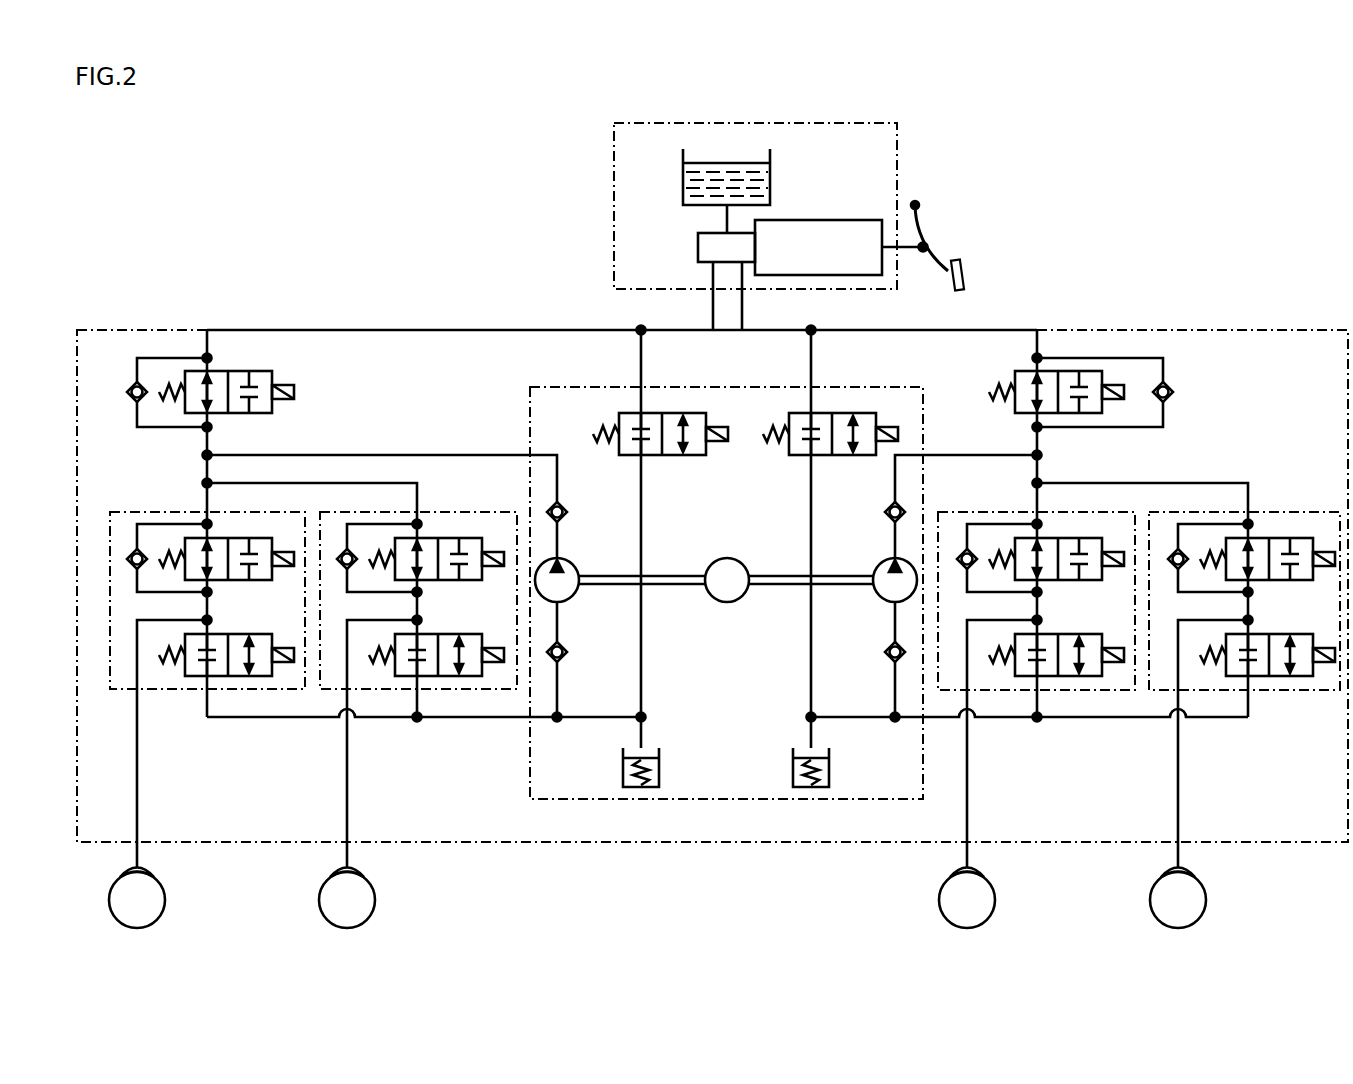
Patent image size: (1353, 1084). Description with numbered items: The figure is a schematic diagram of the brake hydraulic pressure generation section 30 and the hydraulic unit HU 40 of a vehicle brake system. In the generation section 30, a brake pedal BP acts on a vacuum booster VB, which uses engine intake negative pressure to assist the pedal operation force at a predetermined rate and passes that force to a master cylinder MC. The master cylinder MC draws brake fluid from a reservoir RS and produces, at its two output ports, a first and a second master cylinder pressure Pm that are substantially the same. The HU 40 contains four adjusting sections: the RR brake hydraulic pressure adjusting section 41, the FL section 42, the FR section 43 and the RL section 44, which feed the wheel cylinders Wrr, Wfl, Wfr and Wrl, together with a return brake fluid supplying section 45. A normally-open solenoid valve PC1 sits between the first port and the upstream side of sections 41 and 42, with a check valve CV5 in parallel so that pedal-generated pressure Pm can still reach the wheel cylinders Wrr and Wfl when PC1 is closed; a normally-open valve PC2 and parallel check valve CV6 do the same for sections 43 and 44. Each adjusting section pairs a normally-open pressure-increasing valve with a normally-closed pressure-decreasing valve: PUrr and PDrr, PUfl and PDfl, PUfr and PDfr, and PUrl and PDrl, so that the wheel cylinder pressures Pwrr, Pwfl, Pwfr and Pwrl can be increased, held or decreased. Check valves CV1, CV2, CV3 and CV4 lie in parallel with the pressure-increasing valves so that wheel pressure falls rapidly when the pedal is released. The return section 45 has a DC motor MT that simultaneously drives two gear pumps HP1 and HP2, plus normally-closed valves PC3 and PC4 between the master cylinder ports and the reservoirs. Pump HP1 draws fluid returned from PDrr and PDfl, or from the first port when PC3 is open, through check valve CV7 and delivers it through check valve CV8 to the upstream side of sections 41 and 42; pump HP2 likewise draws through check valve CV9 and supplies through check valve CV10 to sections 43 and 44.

The brake hydraulic pressure generation section 30 is at (912, 162).
The HU (hydraulic unit) 40 is at (1125, 296).
The RR brake hydraulic pressure adjusting section 41 is at (1165, 512).
The FL brake hydraulic pressure adjusting section 42 is at (954, 512).
The FR brake hydraulic pressure adjusting section 43 is at (334, 512).
The RL brake hydraulic pressure adjusting section 44 is at (124, 512).
The return brake fluid supplying section 45 is at (795, 803).
The reservoir RS is at (772, 192).
The master cylinder MC is at (697, 243).
The vacuum booster VB is at (839, 247).
The brake pedal BP is at (967, 275).
The master cylinder pressure Pm is at (622, 318).
The normally-open solenoid open-close valve PC1 is at (1028, 372).
The normally-open solenoid open-close valve PC2 is at (262, 372).
The normally-closed solenoid open-close valve PC3 is at (850, 413).
The normally-closed solenoid open-close valve PC4 is at (680, 413).
The check valve CV1 is at (1175, 570).
The check valve CV2 is at (965, 570).
The check valve CV3 is at (345, 570).
The check valve CV4 is at (135, 570).
The check valve CV5 is at (1170, 383).
The check valve CV6 is at (135, 383).
The check valve CV7 is at (884, 648).
The check valve CV8 is at (886, 508).
The check valve CV9 is at (568, 650).
The check valve CV10 is at (567, 510).
The hydraulic pump HP1 is at (870, 597).
The hydraulic pump HP2 is at (577, 597).
The DC motor MT is at (727, 602).
The pressure-increasing valve PUrl is at (228, 538).
The pressure-decreasing valve PDrl is at (228, 635).
The pressure-increasing valve PUfr is at (438, 538).
The pressure-decreasing valve PDfr is at (438, 635).
The pressure-increasing valve PUfl is at (1058, 538).
The pressure-reducing valve PDfl is at (1058, 635).
The pressure-increasing valve PUrr is at (1269, 538).
The pressure-decreasing valve PDrr is at (1269, 635).
The wheel cylinder pressure Pwrl is at (174, 742).
The wheel cylinder pressure Pwfr is at (384, 742).
The wheel cylinder pressure Pwfl is at (1004, 742).
The wheel cylinder pressure Pwrr is at (1215, 742).
The wheel cylinder Wrl is at (128, 867).
The wheel cylinder Wfr is at (356, 868).
The wheel cylinder Wfl is at (976, 868).
The wheel cylinder Wrr is at (1188, 868).